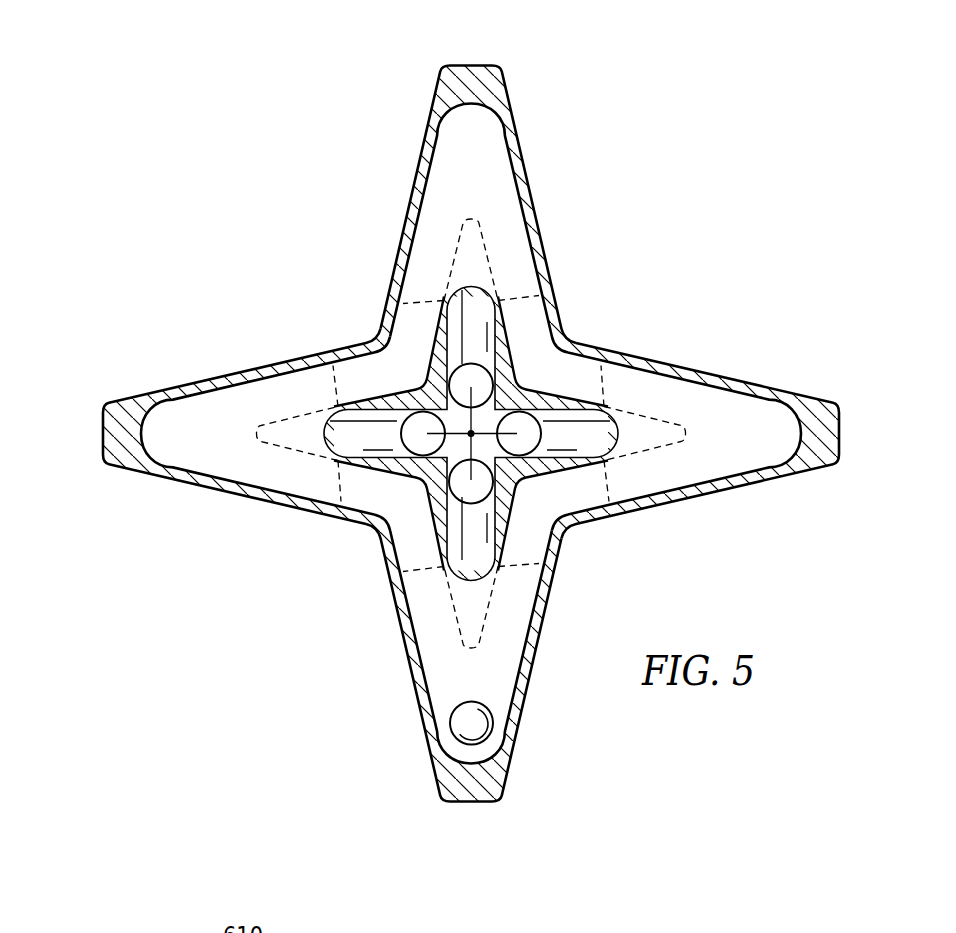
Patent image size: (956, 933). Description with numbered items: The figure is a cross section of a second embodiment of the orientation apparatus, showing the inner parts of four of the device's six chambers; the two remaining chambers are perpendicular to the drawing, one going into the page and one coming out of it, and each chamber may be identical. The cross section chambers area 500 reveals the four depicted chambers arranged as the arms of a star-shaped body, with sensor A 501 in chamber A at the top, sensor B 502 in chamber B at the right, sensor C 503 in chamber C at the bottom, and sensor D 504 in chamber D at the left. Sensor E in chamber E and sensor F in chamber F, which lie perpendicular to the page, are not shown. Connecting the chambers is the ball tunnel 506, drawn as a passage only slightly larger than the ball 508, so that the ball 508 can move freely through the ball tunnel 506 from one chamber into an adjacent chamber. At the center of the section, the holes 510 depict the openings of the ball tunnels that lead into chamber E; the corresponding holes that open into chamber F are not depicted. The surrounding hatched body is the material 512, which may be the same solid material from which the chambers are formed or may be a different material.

The cross section chambers area 500 is at (728, 130).
The sensor A 501 is at (462, 65).
The sensor B 502 is at (840, 438).
The sensor C 503 is at (478, 803).
The sensor D 504 is at (103, 428).
The ball tunnel 506 is at (397, 508).
The ball 508 is at (452, 704).
The holes 510 is at (323, 443).
The material 512 is at (432, 366).